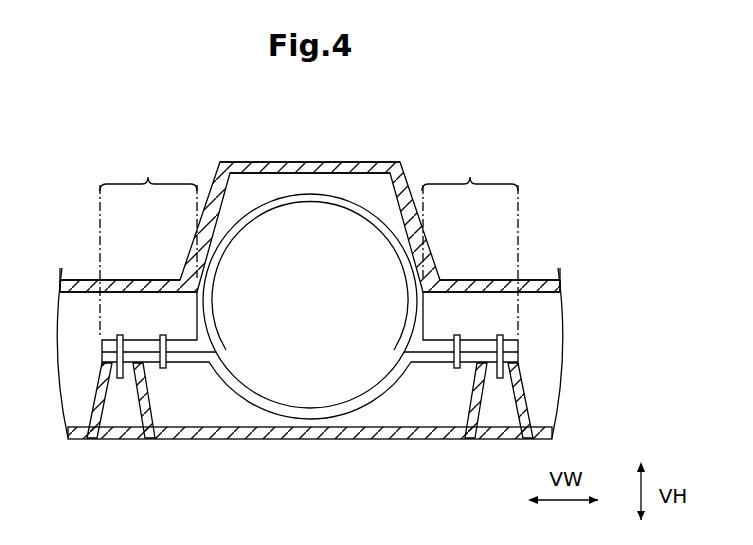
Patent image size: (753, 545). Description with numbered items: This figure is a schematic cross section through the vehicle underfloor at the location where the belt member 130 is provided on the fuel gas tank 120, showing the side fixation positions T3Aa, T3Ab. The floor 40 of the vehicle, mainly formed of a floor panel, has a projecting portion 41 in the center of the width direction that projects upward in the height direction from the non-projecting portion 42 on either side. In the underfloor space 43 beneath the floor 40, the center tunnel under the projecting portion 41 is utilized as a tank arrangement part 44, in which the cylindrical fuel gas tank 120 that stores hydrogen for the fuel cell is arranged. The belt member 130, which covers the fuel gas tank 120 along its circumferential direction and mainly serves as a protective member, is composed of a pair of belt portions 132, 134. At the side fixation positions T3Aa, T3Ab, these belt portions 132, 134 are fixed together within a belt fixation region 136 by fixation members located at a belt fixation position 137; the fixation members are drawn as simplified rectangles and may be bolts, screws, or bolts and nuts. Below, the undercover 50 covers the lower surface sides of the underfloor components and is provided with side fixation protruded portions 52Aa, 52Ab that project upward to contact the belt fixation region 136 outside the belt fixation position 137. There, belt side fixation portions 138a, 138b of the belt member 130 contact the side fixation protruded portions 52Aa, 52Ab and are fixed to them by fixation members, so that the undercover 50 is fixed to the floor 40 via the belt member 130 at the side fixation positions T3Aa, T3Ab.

The floor 40 is at (556, 287).
The projecting portion 41 is at (348, 164).
The non-projecting portion 42 is at (139, 280).
The underfloor space 43 is at (63, 327).
The tank arrangement part 44 is at (386, 203).
The undercover 50 is at (334, 440).
The side fixation protruded portion 52Aa is at (502, 408).
The side fixation protruded portion 52Ab is at (118, 408).
The fuel gas tank 120 is at (327, 321).
The belt member 130 is at (388, 367).
The belt portion 132 is at (520, 361).
The belt portion 134 is at (520, 352).
The belt fixation region 136 is at (309, 243).
The belt fixation position 137 is at (174, 370).
The belt side fixation portion 138a is at (494, 336).
The belt side fixation portion 138b is at (126, 336).
The side fixation position T3Aa is at (537, 271).
The side fixation position T3Ab is at (79, 272).